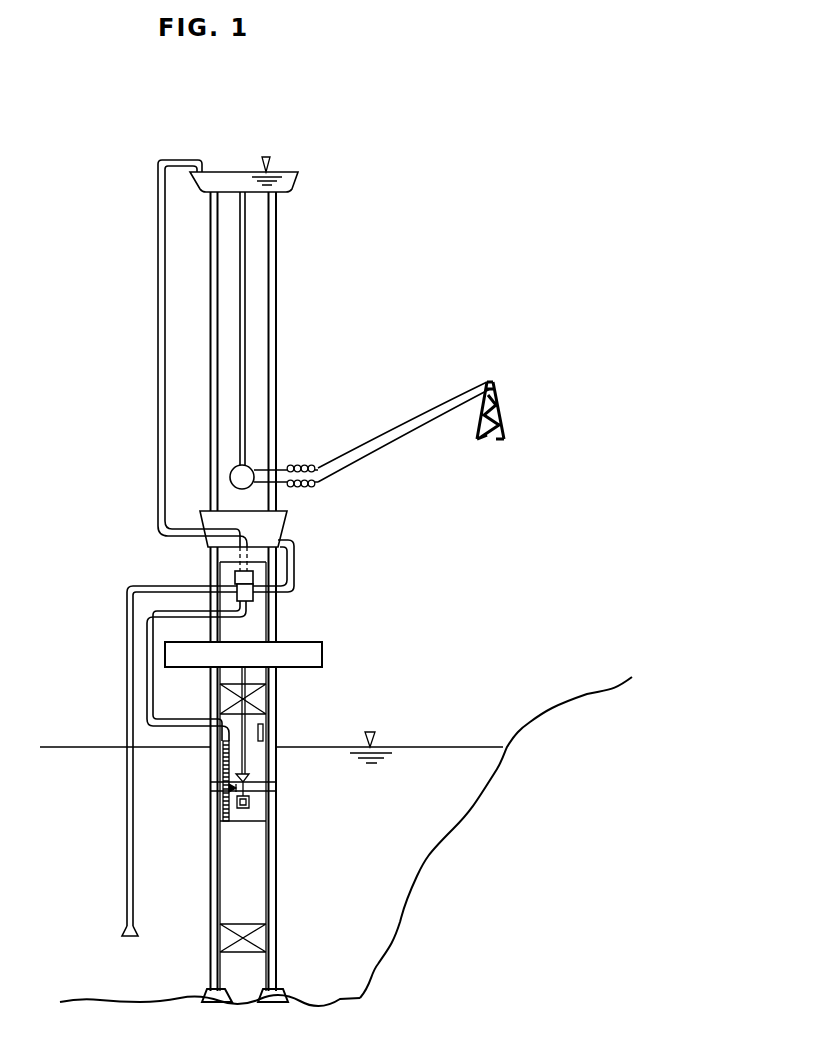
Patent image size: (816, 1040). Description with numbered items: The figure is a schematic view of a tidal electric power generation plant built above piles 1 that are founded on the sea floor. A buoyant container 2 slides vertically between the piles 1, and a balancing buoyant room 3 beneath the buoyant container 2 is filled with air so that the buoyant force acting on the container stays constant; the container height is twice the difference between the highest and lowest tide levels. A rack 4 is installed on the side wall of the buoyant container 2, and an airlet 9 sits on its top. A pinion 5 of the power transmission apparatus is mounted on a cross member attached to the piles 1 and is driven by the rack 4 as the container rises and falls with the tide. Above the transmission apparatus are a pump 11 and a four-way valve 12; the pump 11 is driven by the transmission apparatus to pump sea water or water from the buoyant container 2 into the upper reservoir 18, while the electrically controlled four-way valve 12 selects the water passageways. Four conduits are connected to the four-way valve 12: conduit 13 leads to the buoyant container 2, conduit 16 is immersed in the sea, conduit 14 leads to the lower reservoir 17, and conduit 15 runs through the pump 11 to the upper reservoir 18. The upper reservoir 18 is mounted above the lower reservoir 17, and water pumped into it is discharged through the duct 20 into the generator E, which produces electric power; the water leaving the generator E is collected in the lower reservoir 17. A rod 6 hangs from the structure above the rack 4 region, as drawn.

The piles 1 is at (218, 907).
The buoyant container 2 is at (258, 767).
The balancing buoyant room 3 is at (257, 815).
The rack 4 is at (222, 765).
The pinion 5 is at (228, 790).
The rod 6 is at (246, 722).
The airlet 9 is at (264, 733).
The pump 11 is at (237, 578).
The four-way valve 12 is at (250, 594).
The conduit 13 is at (150, 688).
The conduit 14 is at (294, 566).
The conduit 15 is at (158, 341).
The conduit 16 is at (128, 855).
The lower reservoir 17 is at (280, 520).
The upper reservoir 18 is at (298, 178).
The duct 20 is at (243, 308).
The generator E is at (246, 474).